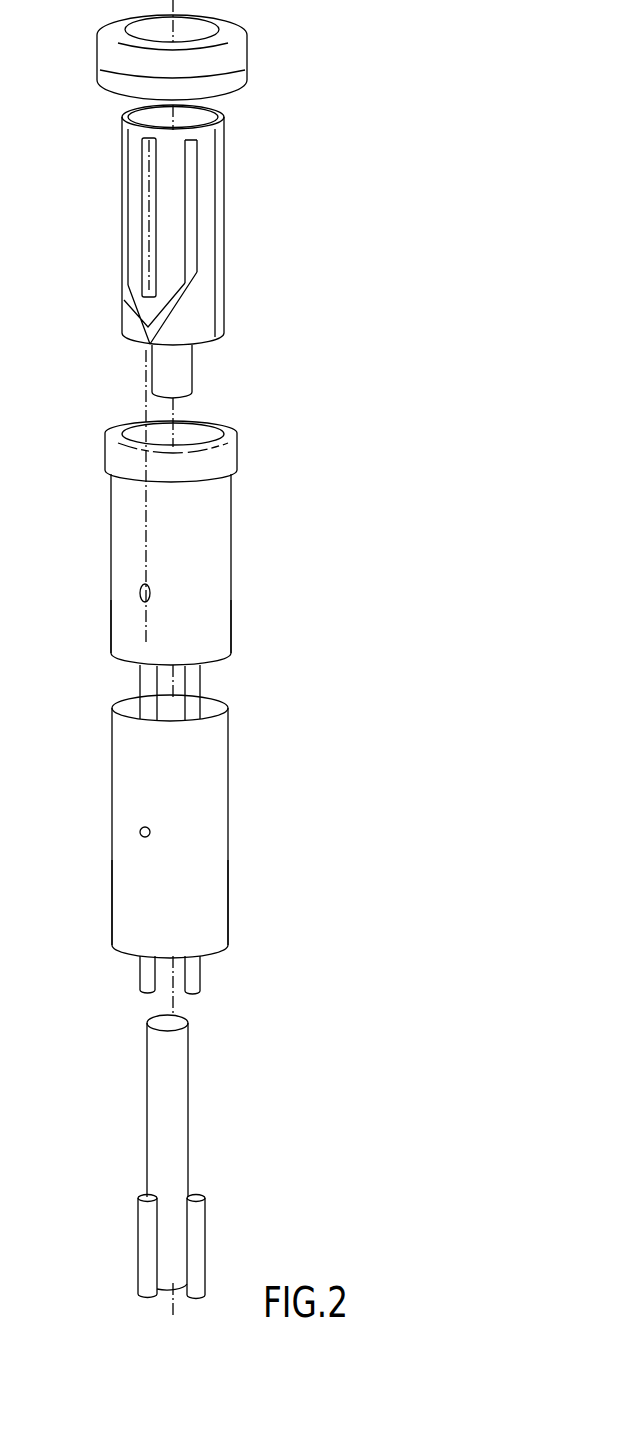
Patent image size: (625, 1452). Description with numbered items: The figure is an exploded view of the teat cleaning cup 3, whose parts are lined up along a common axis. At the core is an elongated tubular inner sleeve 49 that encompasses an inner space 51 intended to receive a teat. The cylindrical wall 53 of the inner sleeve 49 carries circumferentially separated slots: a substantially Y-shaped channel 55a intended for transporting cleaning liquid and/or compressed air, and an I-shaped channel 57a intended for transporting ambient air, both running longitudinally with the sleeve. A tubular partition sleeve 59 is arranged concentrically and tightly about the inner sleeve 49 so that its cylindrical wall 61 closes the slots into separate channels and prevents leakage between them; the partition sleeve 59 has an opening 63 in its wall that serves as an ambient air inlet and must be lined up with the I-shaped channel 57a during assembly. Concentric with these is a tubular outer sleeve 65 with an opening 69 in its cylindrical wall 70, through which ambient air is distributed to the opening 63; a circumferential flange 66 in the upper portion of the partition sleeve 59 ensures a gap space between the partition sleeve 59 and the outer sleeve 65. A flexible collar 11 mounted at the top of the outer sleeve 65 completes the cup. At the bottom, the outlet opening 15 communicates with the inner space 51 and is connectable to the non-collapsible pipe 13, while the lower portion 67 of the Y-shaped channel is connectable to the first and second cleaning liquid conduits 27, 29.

The teat cleaning cup 3 is at (412, 512).
The flexible collar 11 is at (238, 52).
The non-collapsible pipe 13 is at (178, 1090).
The outlet opening 15 is at (182, 380).
The first cleaning liquid conduit 27 is at (148, 1243).
The second cleaning liquid conduit 29 is at (198, 1223).
The inner sleeve 49 is at (246, 218).
The inner space 51 is at (198, 115).
The cylindrical wall 53 is at (203, 273).
The Y-shaped channel 55a is at (157, 298).
The I-shaped channel 57a is at (150, 160).
The partition sleeve 59 is at (248, 577).
The cylindrical wall 61 is at (218, 633).
The opening 63 is at (141, 593).
The outer sleeve 65 is at (252, 824).
The circumferential flange 66 is at (227, 462).
The lower portion of Y-shaped channel 67 is at (145, 335).
The opening 69 is at (140, 832).
The cylindrical wall 70 is at (208, 907).